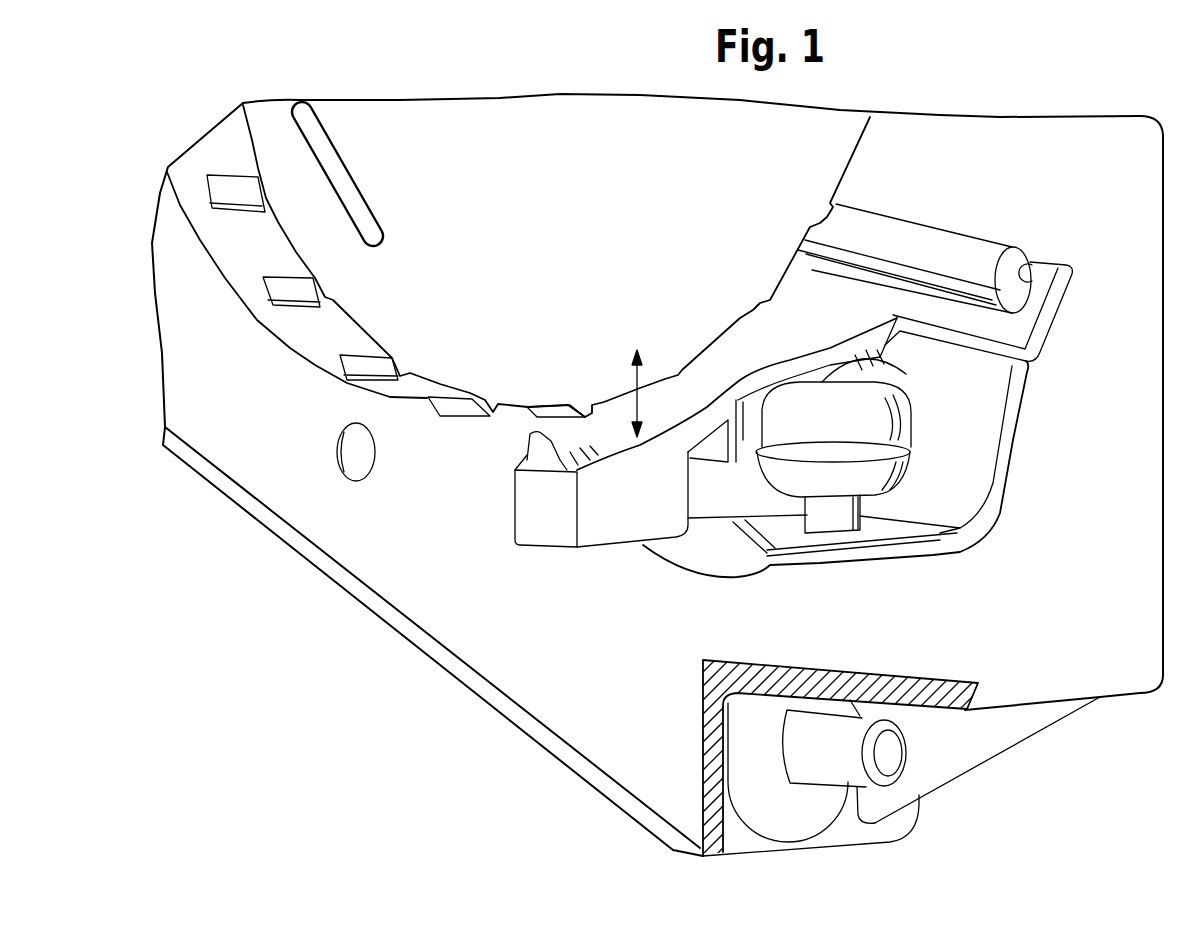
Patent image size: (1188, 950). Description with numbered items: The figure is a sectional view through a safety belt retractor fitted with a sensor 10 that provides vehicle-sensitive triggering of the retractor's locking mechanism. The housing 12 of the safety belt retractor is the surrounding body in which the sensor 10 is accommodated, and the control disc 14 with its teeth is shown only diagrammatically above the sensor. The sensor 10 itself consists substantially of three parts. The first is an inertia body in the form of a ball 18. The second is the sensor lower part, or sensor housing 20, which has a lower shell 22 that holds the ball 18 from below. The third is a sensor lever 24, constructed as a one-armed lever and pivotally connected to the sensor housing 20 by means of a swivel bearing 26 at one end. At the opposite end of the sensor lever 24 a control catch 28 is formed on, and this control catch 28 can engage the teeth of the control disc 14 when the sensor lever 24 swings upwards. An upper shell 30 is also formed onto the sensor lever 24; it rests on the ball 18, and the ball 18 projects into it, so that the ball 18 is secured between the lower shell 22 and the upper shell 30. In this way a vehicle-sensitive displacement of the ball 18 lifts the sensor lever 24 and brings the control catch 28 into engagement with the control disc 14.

The sensor 10 is at (936, 447).
The housing of the safety belt retractor 12 is at (277, 493).
The control disc 14 is at (613, 127).
The ball 18 is at (903, 408).
The sensor housing 20 is at (837, 520).
The lower shell 22 is at (903, 474).
The sensor lever 24 is at (862, 287).
The swivel bearing 26 is at (1030, 273).
The control catch 28 is at (527, 453).
The upper shell 30 is at (898, 364).